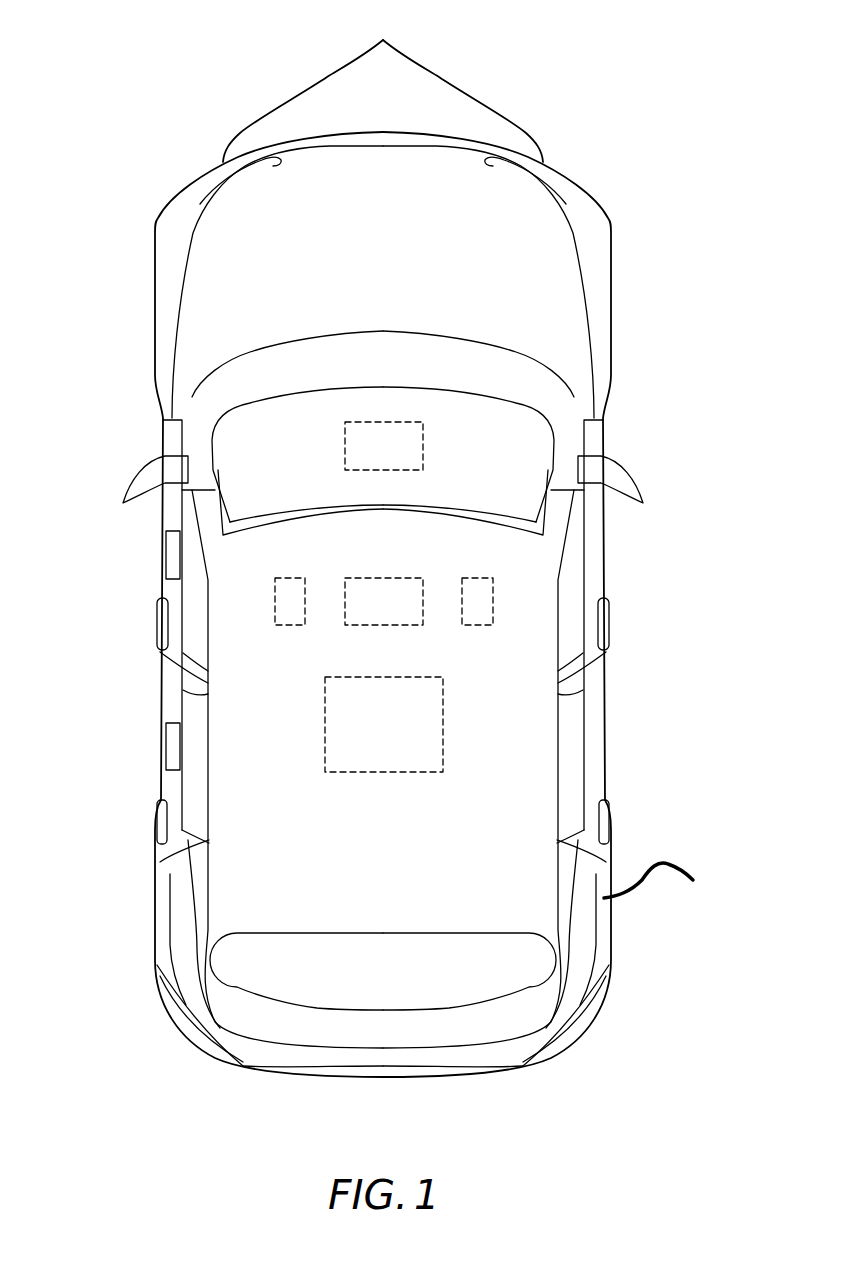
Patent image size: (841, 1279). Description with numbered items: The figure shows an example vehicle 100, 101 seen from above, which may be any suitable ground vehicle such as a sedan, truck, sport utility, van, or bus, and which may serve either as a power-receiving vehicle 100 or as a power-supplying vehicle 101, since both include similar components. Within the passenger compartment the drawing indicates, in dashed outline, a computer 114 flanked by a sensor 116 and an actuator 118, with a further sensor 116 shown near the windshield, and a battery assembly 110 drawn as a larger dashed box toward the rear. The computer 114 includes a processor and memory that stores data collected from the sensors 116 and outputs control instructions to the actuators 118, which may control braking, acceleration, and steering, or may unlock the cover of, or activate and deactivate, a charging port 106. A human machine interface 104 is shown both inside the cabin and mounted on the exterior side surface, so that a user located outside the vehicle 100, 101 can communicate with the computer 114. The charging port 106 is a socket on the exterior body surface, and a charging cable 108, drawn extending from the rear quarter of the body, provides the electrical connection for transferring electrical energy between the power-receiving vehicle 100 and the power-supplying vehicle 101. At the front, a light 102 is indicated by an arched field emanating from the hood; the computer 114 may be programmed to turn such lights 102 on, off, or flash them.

The power-receiving vehicle 100 is at (383, 604).
The power-supplying vehicle 101 is at (427, 835).
The light 102 is at (383, 85).
The human machine interface 104 is at (362, 576).
The charging port 106 is at (160, 755).
The charging cable 108 is at (657, 877).
The battery assembly 110 is at (444, 697).
The vehicle computer 114 is at (273, 593).
The sensor 116 is at (424, 433).
The actuator 118 is at (495, 597).